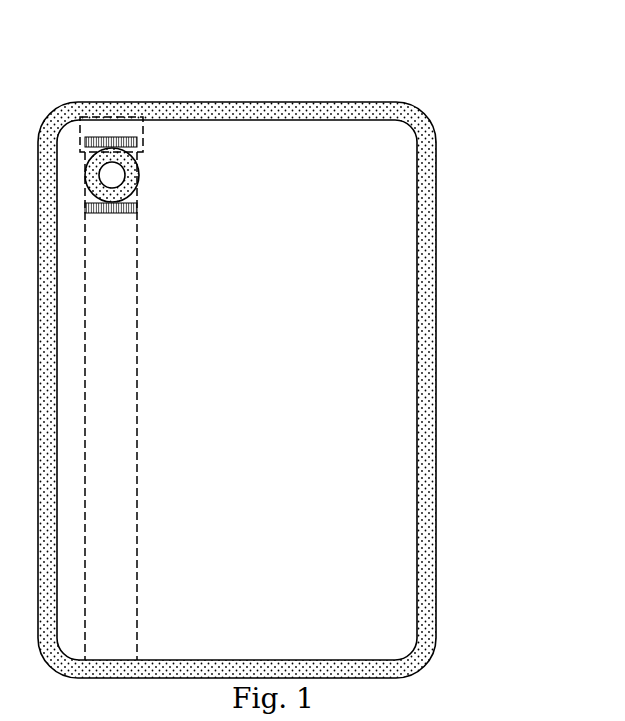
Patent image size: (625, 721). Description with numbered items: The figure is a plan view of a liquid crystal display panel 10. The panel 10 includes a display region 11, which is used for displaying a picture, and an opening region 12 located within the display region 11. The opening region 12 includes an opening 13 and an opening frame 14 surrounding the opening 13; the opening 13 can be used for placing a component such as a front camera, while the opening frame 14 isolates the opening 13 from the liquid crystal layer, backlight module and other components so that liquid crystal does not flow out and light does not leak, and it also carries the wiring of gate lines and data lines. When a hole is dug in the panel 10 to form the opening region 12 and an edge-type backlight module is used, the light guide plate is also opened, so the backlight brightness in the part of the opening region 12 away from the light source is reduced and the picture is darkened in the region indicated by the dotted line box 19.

The liquid crystal display panel 10 is at (399, 85).
The display region 11 is at (380, 392).
The opening region 12 is at (243, 22).
The opening 13 is at (118, 177).
The opening frame 14 is at (132, 143).
The dotted line box 19 is at (87, 117).